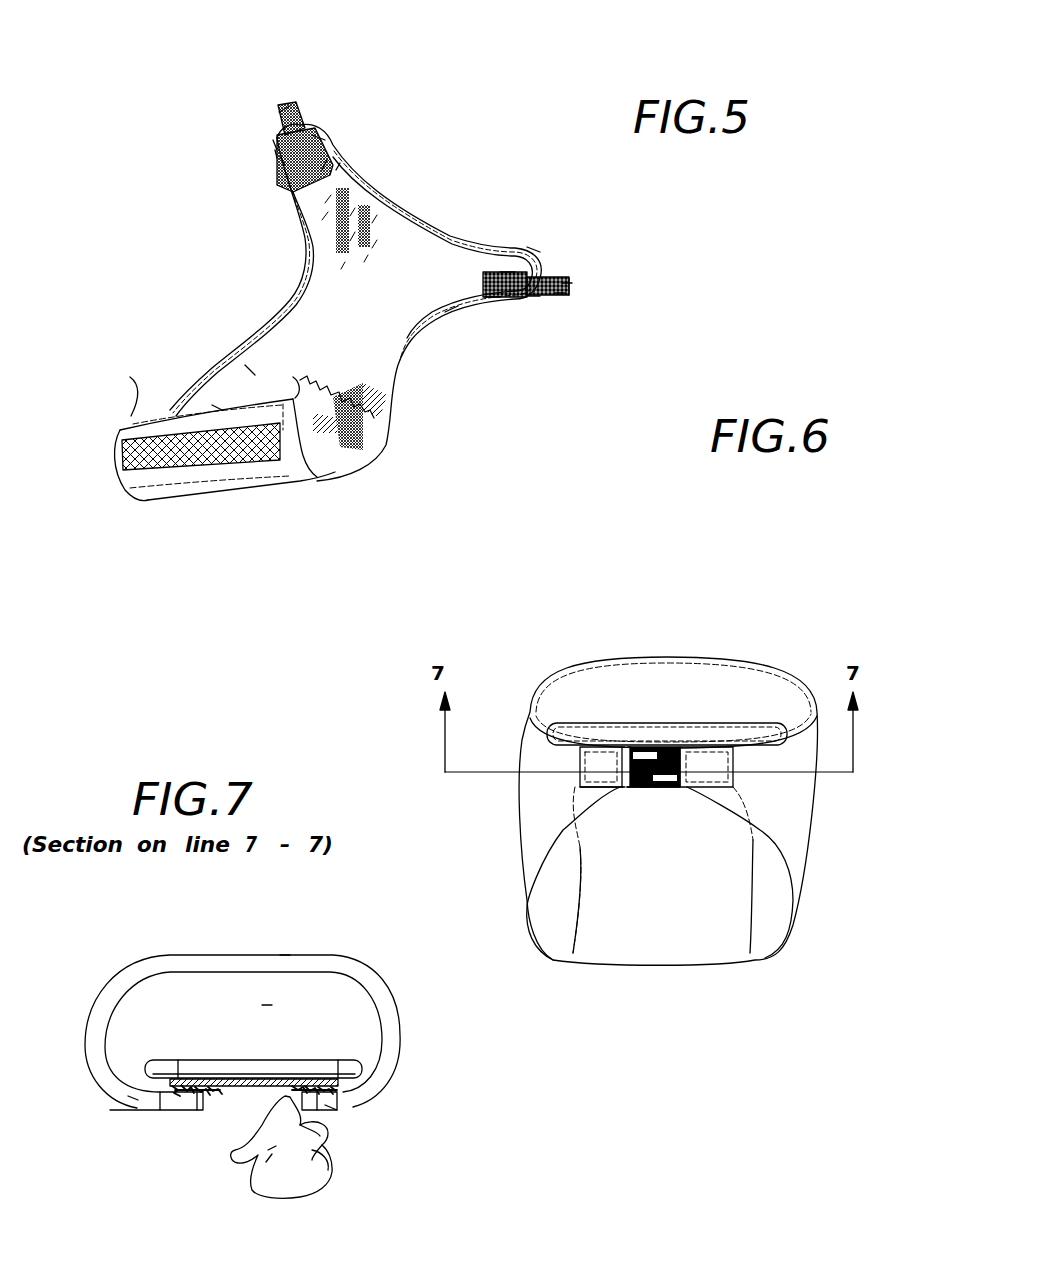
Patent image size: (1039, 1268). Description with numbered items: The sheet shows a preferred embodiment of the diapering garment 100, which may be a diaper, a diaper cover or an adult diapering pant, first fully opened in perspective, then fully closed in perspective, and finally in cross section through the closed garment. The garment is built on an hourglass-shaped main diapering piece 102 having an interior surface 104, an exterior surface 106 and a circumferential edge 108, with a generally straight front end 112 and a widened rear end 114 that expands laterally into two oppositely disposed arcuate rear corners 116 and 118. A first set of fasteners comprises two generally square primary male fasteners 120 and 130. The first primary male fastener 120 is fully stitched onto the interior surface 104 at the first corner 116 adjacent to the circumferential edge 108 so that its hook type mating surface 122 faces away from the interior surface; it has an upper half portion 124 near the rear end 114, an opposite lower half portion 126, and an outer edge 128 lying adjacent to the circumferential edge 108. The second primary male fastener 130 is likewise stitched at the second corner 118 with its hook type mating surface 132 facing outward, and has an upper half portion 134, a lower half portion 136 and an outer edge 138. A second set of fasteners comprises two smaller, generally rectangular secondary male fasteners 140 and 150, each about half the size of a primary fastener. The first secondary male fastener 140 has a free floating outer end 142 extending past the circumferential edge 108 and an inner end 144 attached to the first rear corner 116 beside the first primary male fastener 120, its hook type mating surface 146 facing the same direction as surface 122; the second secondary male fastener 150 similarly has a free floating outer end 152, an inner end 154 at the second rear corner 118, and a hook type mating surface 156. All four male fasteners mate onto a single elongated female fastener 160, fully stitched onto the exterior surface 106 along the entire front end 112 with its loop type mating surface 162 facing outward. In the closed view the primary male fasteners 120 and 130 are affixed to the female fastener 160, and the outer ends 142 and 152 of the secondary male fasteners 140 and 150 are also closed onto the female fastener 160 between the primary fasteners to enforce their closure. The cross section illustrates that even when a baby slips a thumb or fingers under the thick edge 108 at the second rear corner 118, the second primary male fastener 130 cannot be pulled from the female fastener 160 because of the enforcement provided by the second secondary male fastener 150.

In FIG. 5, the diapering garment 100 is at (492, 122).
In FIG. 5, the main diapering piece 102 is at (250, 372).
In FIG. 5, the interior surface 104 is at (393, 395).
In FIG. 7, the interior surface 104 is at (260, 967).
In FIG. 5, the exterior surface 106 is at (250, 480).
In FIG. 7, the exterior surface 106 is at (283, 957).
In FIG. 5, the circumferential edge 108 is at (377, 360).
In FIG. 7, the circumferential edge 108 is at (317, 1103).
In FIG. 5, the front end 112 is at (217, 408).
In FIG. 6, the front end 112 is at (665, 723).
In FIG. 7, the front end 112 is at (227, 1077).
In FIG. 5, the rear end 114 is at (410, 217).
In FIG. 6, the rear end 114 is at (653, 658).
In FIG. 7, the rear end 114 is at (237, 957).
In FIG. 5, the first rear corner 116 is at (340, 163).
In FIG. 6, the first rear corner 116 is at (545, 800).
In FIG. 7, the first rear corner 116 is at (133, 1097).
In FIG. 5, the second rear corner 118 is at (533, 247).
In FIG. 6, the second rear corner 118 is at (763, 793).
In FIG. 7, the second rear corner 118 is at (330, 1107).
In FIG. 5, the first primary male fastener 120 is at (285, 316).
In FIG. 6, the first primary male fastener 120 is at (620, 784).
In FIG. 7, the first primary male fastener 120 is at (143, 1093).
In FIG. 5, the hook type mating surface 122 is at (280, 157).
In FIG. 5, the upper half portion 124 is at (327, 160).
In FIG. 5, the lower half portion 126 is at (275, 150).
In FIG. 5, the outer edge 128 is at (273, 140).
In FIG. 5, the second primary male fastener 130 is at (493, 300).
In FIG. 6, the second primary male fastener 130 is at (685, 786).
In FIG. 7, the second primary male fastener 130 is at (353, 1097).
In FIG. 5, the hook type mating surface 132 is at (505, 297).
In FIG. 5, the upper half portion 134 is at (507, 273).
In FIG. 5, the lower half portion 136 is at (452, 310).
In FIG. 5, the outer edge 138 is at (545, 272).
In FIG. 5, the first secondary male fastener 140 is at (297, 101).
In FIG. 6, the first secondary male fastener 140 is at (640, 787).
In FIG. 7, the first secondary male fastener 140 is at (180, 1090).
In FIG. 5, the free floating outer end 142 is at (285, 114).
In FIG. 6, the free floating outer end 142 is at (640, 745).
In FIG. 5, the inner end 144 is at (320, 133).
In FIG. 5, the hook type mating surface 146 is at (289, 104).
In FIG. 5, the second secondary male fastener 150 is at (570, 280).
In FIG. 6, the second secondary male fastener 150 is at (665, 787).
In FIG. 7, the second secondary male fastener 150 is at (247, 1093).
In FIG. 5, the free floating outer end 152 is at (568, 283).
In FIG. 6, the free floating outer end 152 is at (648, 787).
In FIG. 5, the inner end 154 is at (533, 297).
In FIG. 5, the hook type mating surface 156 is at (560, 293).
In FIG. 5, the female fastener 160 is at (200, 467).
In FIG. 6, the female fastener 160 is at (633, 747).
In FIG. 7, the female fastener 160 is at (217, 1093).
In FIG. 5, the loop type mating surface 162 is at (173, 473).